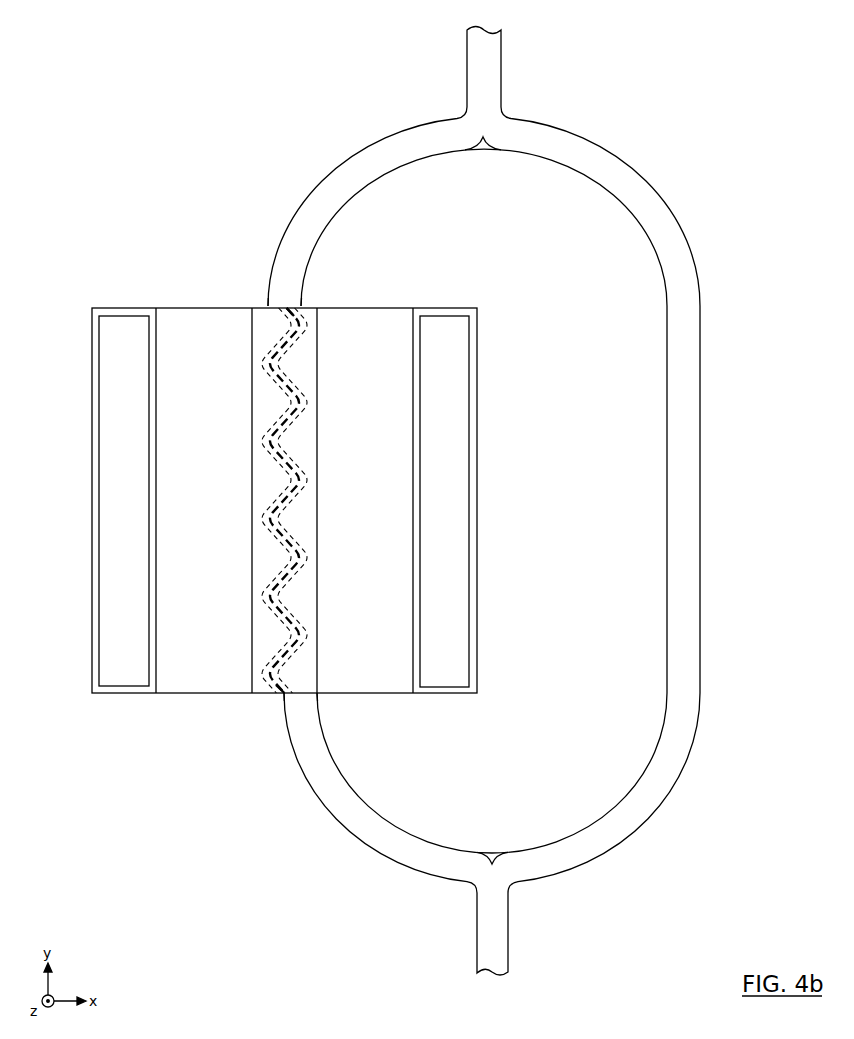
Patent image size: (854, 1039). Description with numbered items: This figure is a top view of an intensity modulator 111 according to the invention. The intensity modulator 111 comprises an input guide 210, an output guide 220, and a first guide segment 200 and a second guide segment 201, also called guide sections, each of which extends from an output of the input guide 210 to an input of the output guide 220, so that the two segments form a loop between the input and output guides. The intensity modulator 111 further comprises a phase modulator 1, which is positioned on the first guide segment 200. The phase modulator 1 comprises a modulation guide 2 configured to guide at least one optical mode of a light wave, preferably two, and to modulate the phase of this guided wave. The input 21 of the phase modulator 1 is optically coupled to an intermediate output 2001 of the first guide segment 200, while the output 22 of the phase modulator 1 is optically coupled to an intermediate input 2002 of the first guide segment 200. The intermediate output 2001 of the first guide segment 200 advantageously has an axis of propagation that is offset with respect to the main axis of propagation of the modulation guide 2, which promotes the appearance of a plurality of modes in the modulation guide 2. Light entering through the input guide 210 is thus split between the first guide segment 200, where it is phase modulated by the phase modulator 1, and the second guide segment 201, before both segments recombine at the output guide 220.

The phase modulator 1 is at (188, 263).
The intensity modulator 111 is at (281, 139).
The modulation guide 2 is at (300, 672).
The input 21 is at (285, 695).
The output 22 is at (278, 308).
The intermediate output 2001 is at (309, 682).
The intermediate input 2002 is at (358, 288).
The first guide segment 200 is at (345, 821).
The second guide segment 201 is at (618, 833).
The input guide 210 is at (485, 938).
The output guide 220 is at (490, 60).